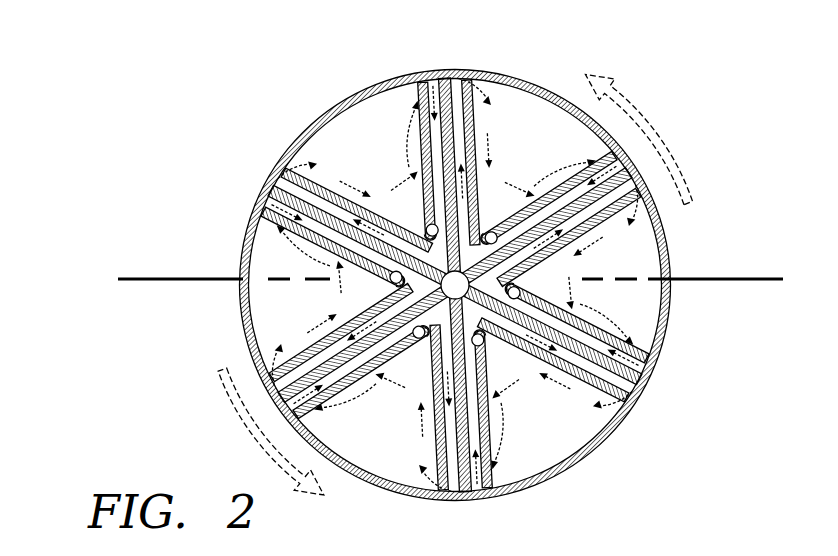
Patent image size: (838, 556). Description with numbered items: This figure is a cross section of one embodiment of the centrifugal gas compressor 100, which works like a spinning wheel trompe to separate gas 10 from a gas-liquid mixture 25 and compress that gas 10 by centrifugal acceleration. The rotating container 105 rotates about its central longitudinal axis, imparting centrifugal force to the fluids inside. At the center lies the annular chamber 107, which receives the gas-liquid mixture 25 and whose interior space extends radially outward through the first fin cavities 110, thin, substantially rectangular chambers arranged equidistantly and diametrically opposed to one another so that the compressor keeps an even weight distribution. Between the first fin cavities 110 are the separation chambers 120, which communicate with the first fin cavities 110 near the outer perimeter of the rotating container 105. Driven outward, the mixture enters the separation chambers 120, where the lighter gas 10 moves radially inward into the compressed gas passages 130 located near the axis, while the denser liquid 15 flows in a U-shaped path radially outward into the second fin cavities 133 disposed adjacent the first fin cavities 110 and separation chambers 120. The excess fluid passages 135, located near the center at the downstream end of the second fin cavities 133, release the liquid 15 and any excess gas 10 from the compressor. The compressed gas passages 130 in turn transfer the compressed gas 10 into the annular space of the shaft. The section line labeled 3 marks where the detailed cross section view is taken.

The centrifugal gas compressor 100 is at (383, 282).
The gas 10 is at (356, 100).
The rotating container 105 is at (556, 90).
The separation chambers 120 is at (410, 488).
The compressed gas passages 130 is at (372, 298).
The first fin cavities 110 is at (469, 135).
The second fin cavities 133 is at (427, 150).
The annular chamber 107 is at (480, 222).
The excess fluid passages 135 is at (408, 345).
The gas-liquid mixture 25 is at (388, 235).
The liquid 15 is at (590, 246).
The section line 3- 3 is at (133, 258).